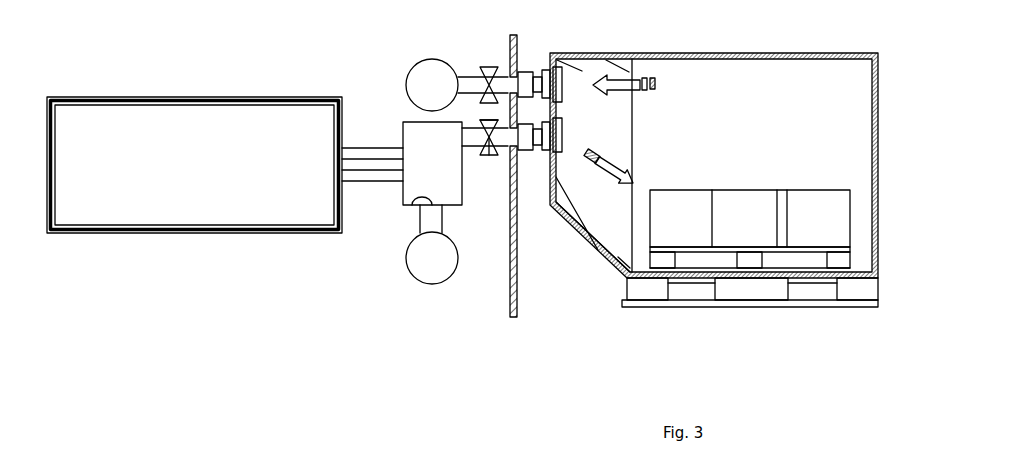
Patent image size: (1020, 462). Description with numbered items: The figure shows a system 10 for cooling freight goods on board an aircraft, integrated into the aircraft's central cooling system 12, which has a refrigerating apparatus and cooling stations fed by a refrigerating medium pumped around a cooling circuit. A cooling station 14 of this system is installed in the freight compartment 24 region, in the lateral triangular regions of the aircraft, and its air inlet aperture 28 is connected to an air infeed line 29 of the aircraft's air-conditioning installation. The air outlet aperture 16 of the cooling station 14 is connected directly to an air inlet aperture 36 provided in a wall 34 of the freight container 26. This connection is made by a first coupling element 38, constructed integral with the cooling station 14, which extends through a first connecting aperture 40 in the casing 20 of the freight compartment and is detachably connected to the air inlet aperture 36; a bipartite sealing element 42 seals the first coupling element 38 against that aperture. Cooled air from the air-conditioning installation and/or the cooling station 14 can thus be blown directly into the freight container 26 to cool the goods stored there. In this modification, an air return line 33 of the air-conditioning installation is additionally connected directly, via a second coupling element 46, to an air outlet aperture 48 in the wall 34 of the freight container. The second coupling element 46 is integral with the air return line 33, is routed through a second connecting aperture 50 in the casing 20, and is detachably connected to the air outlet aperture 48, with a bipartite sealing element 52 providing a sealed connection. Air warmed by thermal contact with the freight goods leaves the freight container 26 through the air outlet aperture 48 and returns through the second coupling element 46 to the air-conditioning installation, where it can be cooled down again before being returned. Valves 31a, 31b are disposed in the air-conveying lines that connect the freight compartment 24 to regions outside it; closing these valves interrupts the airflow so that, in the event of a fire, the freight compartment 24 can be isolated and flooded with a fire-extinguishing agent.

The system for cooling freight goods 10 is at (330, 60).
The central cooling system 12 is at (149, 90).
The cooling station 14 is at (432, 163).
The air outlet aperture 16 is at (462, 128).
The casing 20 is at (508, 300).
The freight compartment 24 is at (750, 167).
The freight container 26 is at (816, 52).
The air inlet aperture 28 is at (410, 206).
The air infeed line 29 is at (406, 262).
The valve 31a is at (489, 158).
The valve 31b is at (487, 64).
The air return line 33 is at (412, 74).
The wall of the freight container 34 is at (564, 186).
The air inlet aperture 36 is at (562, 128).
The first coupling element 38 is at (478, 150).
The first connecting aperture 40 is at (489, 156).
The sealing element 42 is at (540, 158).
The second coupling element 46 is at (468, 77).
The air outlet aperture 48 is at (562, 78).
The second connecting aperture 50 is at (512, 56).
The sealing element 52 is at (537, 60).